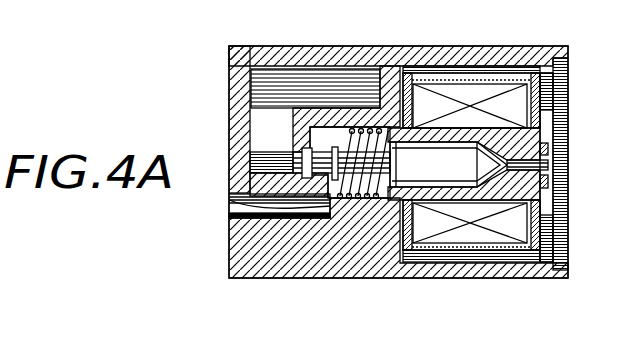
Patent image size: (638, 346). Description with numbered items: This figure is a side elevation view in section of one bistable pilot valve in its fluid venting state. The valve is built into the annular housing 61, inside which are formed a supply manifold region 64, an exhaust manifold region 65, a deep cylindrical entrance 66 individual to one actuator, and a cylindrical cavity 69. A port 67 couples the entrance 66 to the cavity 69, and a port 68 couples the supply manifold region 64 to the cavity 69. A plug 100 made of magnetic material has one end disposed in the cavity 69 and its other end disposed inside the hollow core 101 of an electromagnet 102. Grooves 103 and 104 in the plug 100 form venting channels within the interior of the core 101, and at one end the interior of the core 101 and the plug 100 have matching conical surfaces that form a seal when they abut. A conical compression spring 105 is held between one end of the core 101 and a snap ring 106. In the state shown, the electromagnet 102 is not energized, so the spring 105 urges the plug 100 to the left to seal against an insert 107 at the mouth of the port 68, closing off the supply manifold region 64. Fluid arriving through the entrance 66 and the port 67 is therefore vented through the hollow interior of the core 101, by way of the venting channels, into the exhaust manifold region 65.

The housing 61 is at (487, 50).
The supply manifold region 64 is at (263, 75).
The exhaust manifold region 65 is at (547, 127).
The entrance 66 is at (228, 200).
The port 67 is at (228, 214).
The port 68 is at (292, 160).
The cylindrical cavity 69 is at (352, 128).
The plug 100 is at (419, 170).
The hollow core 101 is at (547, 178).
The electromagnet 102 is at (487, 242).
The groove 103 is at (465, 128).
The groove 104 is at (465, 187).
The conical compression spring 105 is at (375, 200).
The snap ring 106 is at (330, 206).
The insert 107 is at (322, 128).